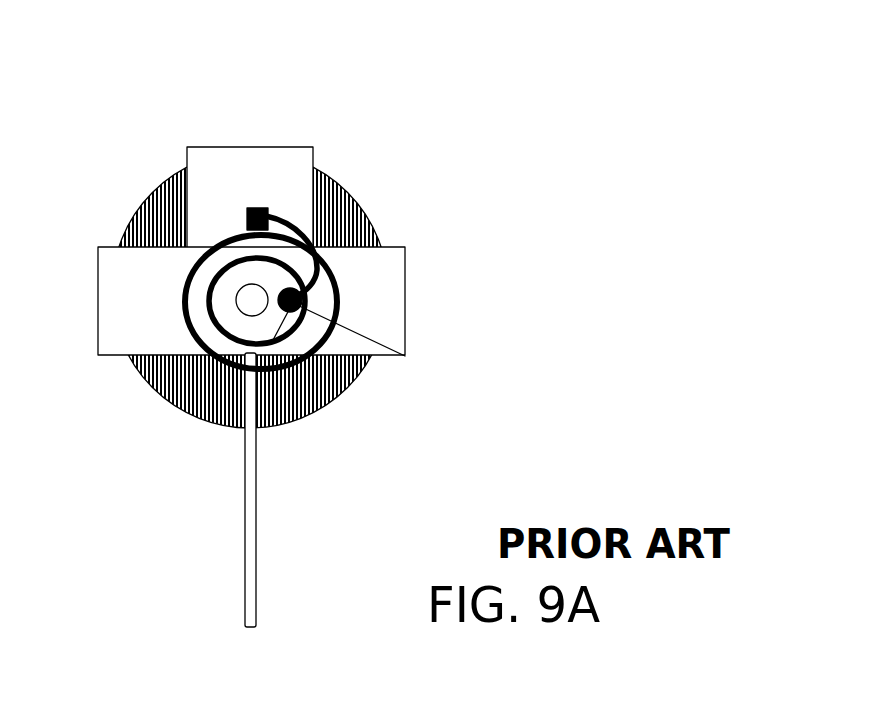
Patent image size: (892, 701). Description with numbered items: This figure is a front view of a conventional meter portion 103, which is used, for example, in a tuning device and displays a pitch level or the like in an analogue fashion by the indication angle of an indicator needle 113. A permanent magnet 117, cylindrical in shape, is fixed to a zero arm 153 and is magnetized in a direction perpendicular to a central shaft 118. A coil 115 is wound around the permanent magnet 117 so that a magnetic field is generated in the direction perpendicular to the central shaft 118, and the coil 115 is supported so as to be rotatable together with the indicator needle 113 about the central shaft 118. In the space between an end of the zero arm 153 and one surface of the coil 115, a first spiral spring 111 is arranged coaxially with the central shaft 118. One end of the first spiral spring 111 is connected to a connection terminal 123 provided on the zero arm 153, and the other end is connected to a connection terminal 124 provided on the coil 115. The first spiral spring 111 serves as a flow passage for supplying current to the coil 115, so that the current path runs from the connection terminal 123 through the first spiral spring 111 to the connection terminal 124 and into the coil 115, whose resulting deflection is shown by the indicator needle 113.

The meter portion 103 is at (332, 319).
The first spiral spring 111 is at (335, 262).
The indicator needle 113 is at (257, 533).
The coil 115 is at (395, 312).
The permanent magnet 117 is at (148, 220).
The central shaft 118 is at (252, 303).
The connection terminal 123 is at (250, 210).
The connection terminal 124 is at (293, 310).
The zero arm 153 is at (292, 162).